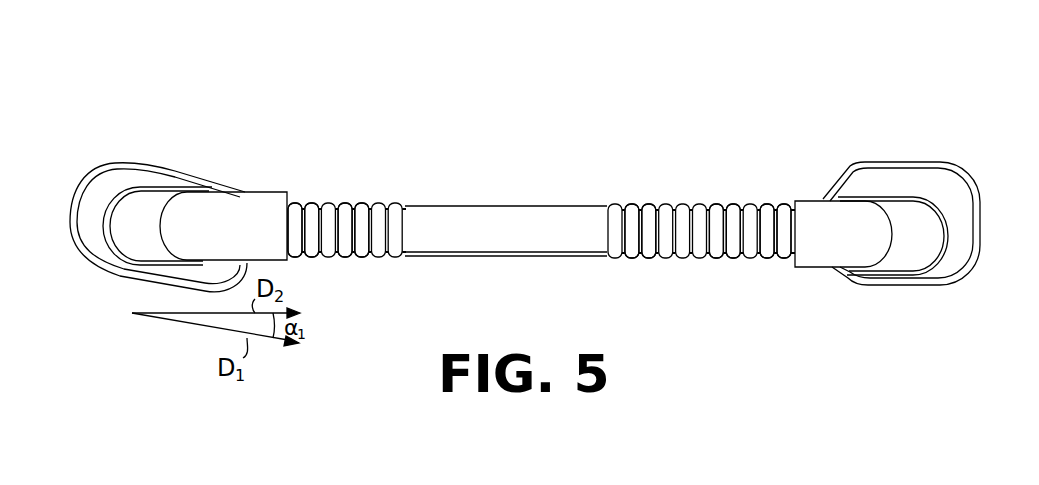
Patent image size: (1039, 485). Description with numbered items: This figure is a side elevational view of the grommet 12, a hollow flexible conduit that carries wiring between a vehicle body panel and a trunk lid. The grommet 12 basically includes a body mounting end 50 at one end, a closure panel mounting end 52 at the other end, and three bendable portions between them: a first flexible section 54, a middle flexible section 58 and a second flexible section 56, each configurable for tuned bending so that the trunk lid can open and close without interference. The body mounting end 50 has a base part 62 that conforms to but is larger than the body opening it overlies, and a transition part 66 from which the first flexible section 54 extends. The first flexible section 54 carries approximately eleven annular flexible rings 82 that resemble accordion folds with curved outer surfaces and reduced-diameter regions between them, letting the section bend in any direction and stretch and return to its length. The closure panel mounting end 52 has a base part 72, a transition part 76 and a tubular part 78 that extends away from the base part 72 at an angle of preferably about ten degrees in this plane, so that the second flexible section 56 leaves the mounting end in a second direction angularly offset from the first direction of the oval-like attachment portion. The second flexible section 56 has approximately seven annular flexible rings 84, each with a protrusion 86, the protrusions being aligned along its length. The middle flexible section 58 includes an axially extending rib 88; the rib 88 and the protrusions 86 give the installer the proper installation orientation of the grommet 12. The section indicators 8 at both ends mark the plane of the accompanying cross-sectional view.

The grommet 12 is at (550, 132).
The section line for FIG. 8 is at (65, 225).
The body mounting end 50 is at (858, 162).
The closure panel mounting end 52 is at (118, 163).
The first flexible section 54 is at (658, 207).
The second flexible section 56 is at (337, 210).
The middle flexible section 58 is at (478, 218).
The base part 62 is at (942, 178).
The transition part 66 is at (922, 243).
The base part 72 is at (118, 182).
The transition part 76 is at (143, 227).
The tubular part 78 is at (245, 205).
The annular flexible rings 82 is at (717, 208).
The annular flexible rings 84 is at (316, 202).
The protrusion 86 is at (329, 256).
The axially extending rib 88 is at (493, 257).